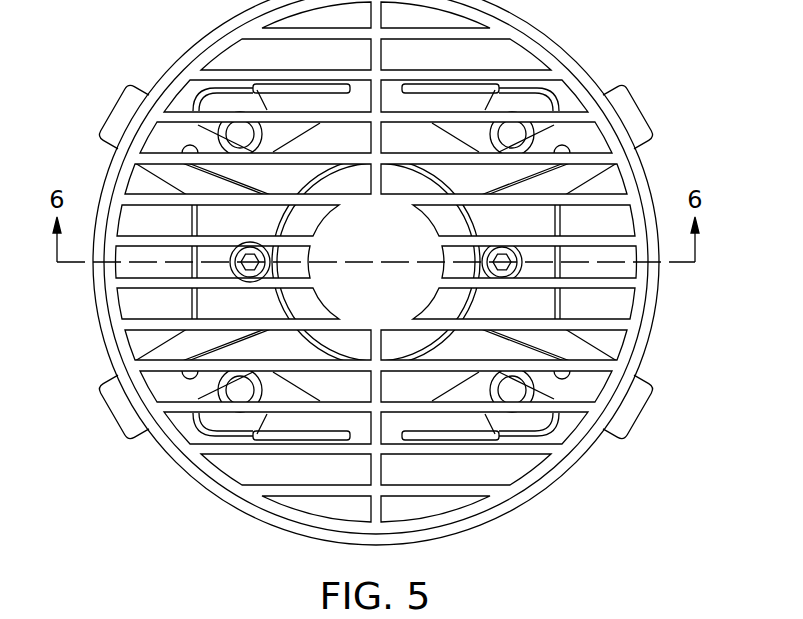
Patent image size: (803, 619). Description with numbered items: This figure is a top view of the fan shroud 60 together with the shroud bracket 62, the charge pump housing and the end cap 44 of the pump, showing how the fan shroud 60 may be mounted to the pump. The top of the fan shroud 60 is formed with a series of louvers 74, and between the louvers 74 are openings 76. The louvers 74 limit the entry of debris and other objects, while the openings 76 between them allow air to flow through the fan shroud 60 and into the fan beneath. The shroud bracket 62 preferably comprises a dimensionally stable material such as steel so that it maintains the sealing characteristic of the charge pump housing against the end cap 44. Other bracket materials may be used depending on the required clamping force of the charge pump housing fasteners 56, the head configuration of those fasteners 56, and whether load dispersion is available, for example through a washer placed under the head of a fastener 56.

The end cap 44 is at (523, 423).
The charge pump housing fastener 56 is at (252, 252).
The fan shroud 60 is at (210, 487).
The shroud bracket 62 is at (590, 340).
The louver 74 is at (600, 283).
The opening 76 is at (270, 57).